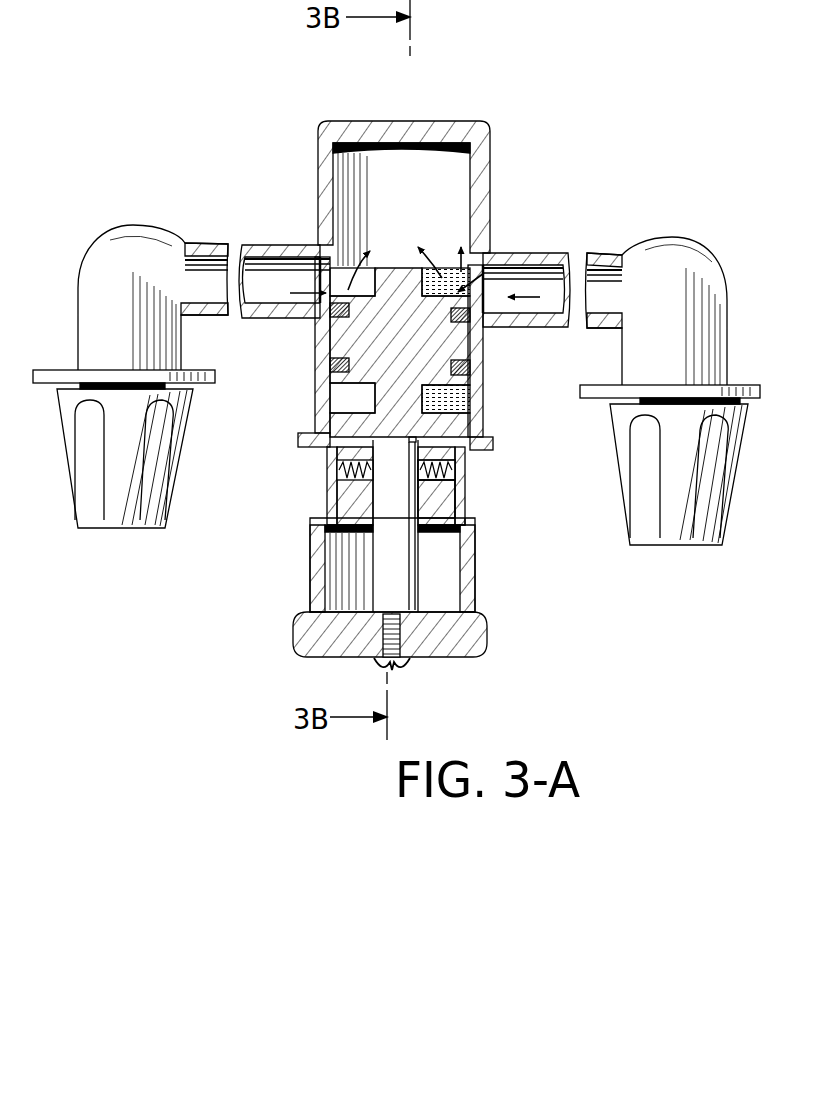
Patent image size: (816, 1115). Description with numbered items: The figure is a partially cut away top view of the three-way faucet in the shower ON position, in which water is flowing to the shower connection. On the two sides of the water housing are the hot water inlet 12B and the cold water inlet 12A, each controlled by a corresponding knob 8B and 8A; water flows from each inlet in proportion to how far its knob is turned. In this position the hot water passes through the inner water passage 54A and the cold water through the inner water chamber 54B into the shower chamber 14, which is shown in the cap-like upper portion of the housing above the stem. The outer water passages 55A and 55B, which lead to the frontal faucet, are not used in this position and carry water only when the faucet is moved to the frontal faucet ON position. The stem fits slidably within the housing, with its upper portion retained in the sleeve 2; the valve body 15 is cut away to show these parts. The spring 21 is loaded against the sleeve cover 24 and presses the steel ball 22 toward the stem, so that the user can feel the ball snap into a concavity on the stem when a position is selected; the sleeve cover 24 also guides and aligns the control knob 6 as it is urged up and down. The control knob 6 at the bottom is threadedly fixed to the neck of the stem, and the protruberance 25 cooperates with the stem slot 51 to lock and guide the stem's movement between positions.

The shower chamber 14 is at (402, 158).
The valve body 15 is at (315, 411).
The inner water passage 54A is at (336, 262).
The inner water chamber 54B is at (545, 234).
The outer water passage 55A is at (340, 397).
The outer water passage 55B is at (455, 401).
The sleeve 2 is at (472, 464).
The spring 21 is at (462, 471).
The steel ball 22 is at (437, 487).
The sleeve cover 24 is at (327, 497).
The stem slot 51 is at (376, 498).
The protruberance 25 is at (414, 500).
The control knob 6 is at (478, 645).
The cold water inlet 12A is at (687, 257).
The hot water inlet 12B is at (137, 244).
The knob 8A is at (670, 534).
The knob 8B is at (117, 523).